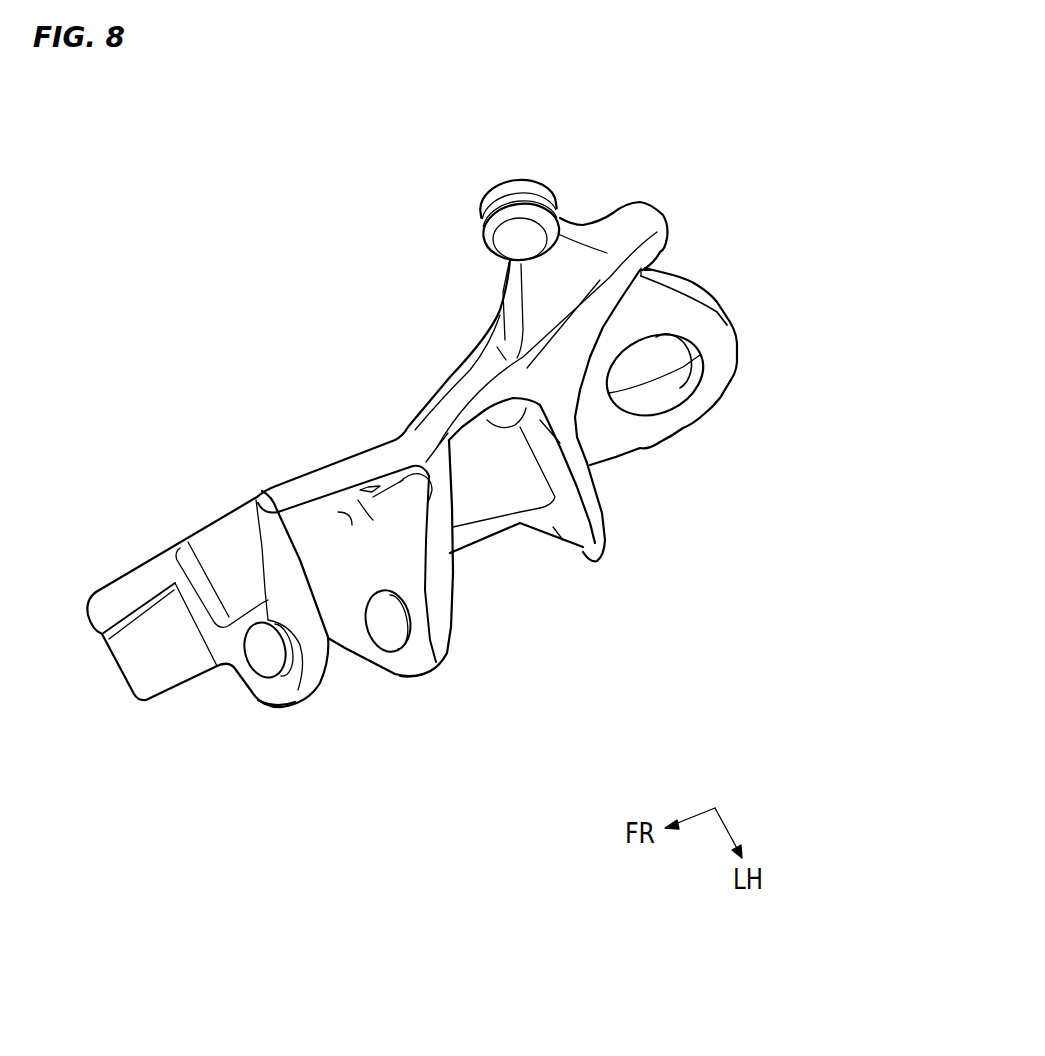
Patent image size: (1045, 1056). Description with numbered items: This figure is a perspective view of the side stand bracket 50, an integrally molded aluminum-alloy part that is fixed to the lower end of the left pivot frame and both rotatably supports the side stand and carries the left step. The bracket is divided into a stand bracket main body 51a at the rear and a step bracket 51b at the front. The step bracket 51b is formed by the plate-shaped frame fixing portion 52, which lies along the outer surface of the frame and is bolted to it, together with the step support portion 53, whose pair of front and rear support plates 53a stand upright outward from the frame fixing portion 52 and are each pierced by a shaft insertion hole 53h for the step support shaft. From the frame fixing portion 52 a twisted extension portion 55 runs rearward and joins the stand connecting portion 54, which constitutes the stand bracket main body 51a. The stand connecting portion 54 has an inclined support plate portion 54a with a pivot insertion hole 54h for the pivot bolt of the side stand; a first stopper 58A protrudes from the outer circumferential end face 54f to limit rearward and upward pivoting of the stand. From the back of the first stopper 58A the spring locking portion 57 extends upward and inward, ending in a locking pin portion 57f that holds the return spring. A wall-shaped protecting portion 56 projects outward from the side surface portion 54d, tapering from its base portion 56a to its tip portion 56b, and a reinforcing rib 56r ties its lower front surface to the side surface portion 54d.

The side stand bracket 50 is at (413, 413).
The stand bracket main body 51a is at (640, 201).
The step bracket 51b is at (257, 493).
The frame fixing portion 52 is at (318, 474).
The step support portion 53 is at (403, 677).
The support plate 53a is at (427, 675).
The shaft insertion hole 53h is at (405, 616).
The stand connecting portion 54 is at (740, 346).
The support plate portion 54a is at (712, 402).
The side surface portion 54d is at (593, 460).
The outer circumferential end face 54f is at (700, 283).
The pivot insertion hole 54h is at (663, 367).
The extension portion 55 is at (500, 535).
The protecting portion 56 is at (608, 542).
The base portion 56a is at (545, 443).
The tip portion 56b is at (607, 510).
The reinforcing rib 56r is at (552, 530).
The spring locking portion 57 is at (580, 225).
The locking pin portion 57f is at (497, 237).
The first stopper 58A is at (663, 256).